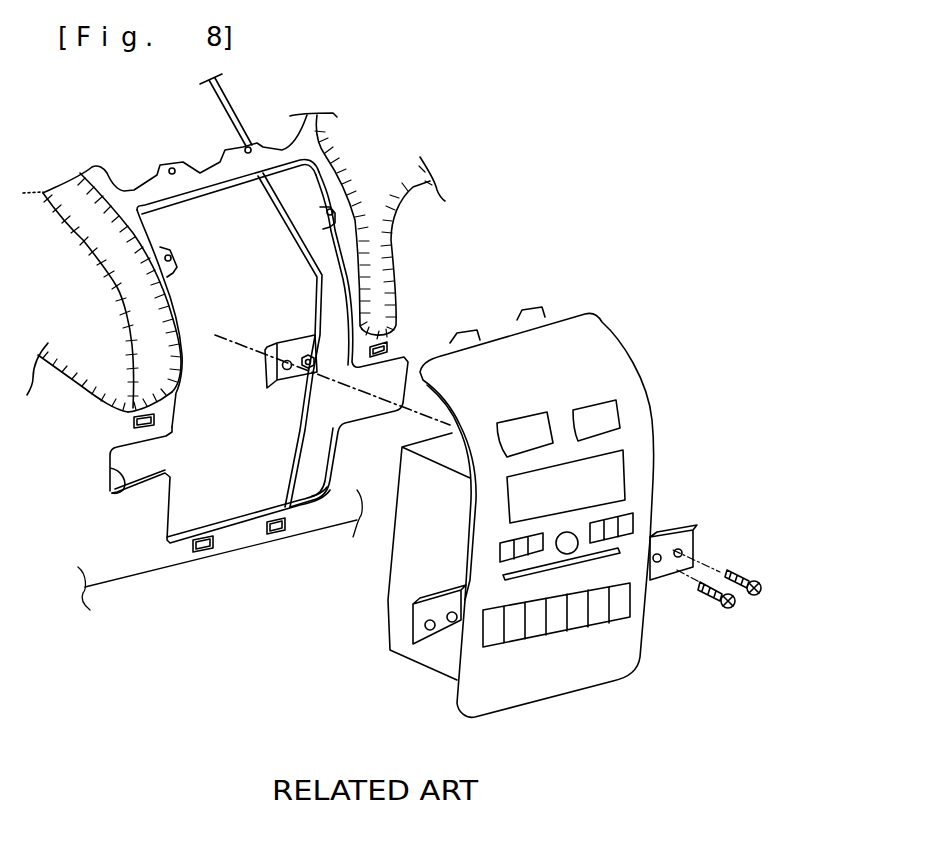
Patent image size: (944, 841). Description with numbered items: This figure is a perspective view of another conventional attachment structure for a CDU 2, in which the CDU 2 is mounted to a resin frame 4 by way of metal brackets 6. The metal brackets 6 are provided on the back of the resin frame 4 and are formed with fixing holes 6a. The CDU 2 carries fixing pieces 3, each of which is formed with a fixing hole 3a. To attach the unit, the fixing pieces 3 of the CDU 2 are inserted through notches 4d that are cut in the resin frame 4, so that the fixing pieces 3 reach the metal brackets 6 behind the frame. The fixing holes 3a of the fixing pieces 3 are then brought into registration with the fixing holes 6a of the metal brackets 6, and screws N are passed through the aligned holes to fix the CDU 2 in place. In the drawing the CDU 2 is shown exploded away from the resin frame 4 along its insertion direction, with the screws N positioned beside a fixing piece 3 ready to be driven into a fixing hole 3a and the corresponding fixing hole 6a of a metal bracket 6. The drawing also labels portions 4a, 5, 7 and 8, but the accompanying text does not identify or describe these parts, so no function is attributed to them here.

The CDU 2 is at (597, 466).
The fixing pieces 3 is at (728, 499).
The fixing holes 3a is at (700, 543).
The resin frame 4 is at (110, 430).
The padded portion of bezel 4a is at (173, 342).
The notches 4d is at (113, 492).
The padded pillar portion 5 is at (383, 270).
The metal brackets 6 is at (330, 273).
The fixing holes 6a is at (288, 380).
The inner wall of pillar 7 is at (347, 330).
The front face of center panel 8 is at (587, 343).
The screws N is at (763, 597).